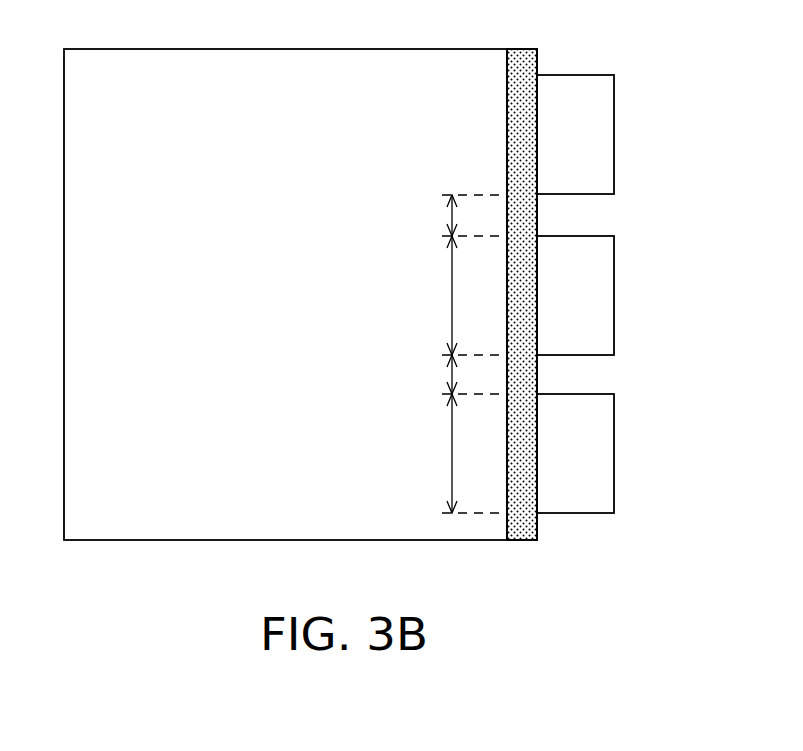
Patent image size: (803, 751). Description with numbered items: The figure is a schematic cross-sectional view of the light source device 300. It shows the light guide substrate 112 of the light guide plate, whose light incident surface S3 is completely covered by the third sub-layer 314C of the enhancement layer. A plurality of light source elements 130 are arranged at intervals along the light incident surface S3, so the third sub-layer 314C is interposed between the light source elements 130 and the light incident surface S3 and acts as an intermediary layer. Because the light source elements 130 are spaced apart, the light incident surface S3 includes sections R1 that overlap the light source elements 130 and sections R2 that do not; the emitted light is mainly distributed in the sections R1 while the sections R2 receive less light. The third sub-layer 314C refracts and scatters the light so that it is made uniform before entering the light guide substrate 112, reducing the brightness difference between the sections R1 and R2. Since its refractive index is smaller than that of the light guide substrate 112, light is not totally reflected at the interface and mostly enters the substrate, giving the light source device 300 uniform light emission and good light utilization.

The light guide substrate 112 is at (312, 48).
The third sub-layer 314C is at (518, 60).
The light incident surface S3 is at (505, 107).
The light source element 130 is at (597, 125).
The section overlapping the light source elements R1 is at (435, 374).
The section not overlapping the light source elements R2 is at (435, 300).
The light source device 300 is at (686, 588).